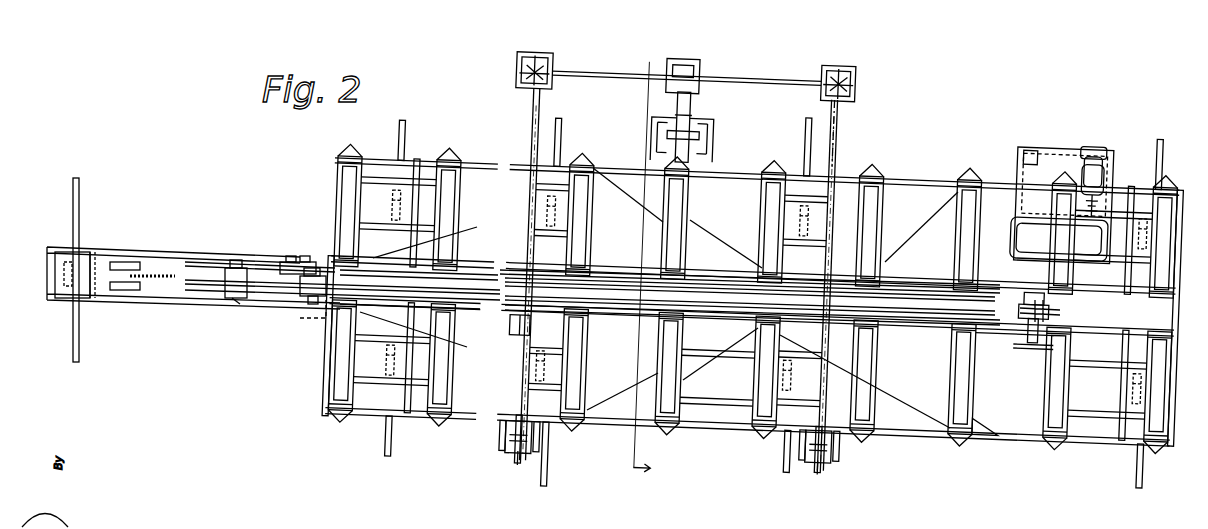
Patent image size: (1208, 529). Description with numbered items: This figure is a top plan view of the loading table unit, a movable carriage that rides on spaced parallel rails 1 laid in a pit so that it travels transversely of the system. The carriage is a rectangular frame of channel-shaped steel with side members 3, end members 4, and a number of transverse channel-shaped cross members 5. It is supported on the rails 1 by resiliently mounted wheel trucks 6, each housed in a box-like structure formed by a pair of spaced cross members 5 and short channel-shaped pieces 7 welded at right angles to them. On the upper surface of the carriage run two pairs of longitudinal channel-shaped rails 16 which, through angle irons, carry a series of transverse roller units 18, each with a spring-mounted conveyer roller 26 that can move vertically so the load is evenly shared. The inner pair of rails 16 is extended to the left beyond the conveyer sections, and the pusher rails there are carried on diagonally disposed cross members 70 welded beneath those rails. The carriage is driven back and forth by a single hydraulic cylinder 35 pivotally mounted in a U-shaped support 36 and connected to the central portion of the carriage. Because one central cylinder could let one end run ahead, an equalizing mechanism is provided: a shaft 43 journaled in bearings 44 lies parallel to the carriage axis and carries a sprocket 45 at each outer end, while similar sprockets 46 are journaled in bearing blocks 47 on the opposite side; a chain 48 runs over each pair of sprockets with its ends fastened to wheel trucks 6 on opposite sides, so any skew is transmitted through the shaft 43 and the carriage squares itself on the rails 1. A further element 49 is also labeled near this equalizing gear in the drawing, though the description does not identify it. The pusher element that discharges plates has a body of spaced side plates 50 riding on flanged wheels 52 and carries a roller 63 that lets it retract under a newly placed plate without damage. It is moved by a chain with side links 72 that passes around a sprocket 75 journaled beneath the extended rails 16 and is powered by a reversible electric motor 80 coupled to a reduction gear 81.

The rails 1 is at (388, 440).
The side members 3 is at (612, 172).
The end members 4 is at (332, 370).
The cross members 5 is at (418, 238).
The wheel trucks 6 is at (395, 204).
The short channel-shaped pieces 7 is at (412, 160).
The channel-shaped rails 16 is at (212, 255).
The roller units 18 is at (345, 182).
The conveyer roller 26 is at (455, 219).
The hydraulic cylinder 35 is at (690, 104).
The U-shaped support 36 is at (712, 130).
The shaft 43 is at (780, 80).
The bearings 44 is at (550, 66).
The sprocket 45 is at (518, 62).
The sprockets 46 is at (522, 460).
The bearing blocks 47 is at (500, 448).
The chain 48 is at (520, 360).
The vertical shaft 49 is at (840, 135).
The side plates 50 is at (290, 260).
The flanged wheels 52 is at (244, 298).
The roller 63 is at (312, 302).
The cross members 70 is at (304, 332).
The side links 72 is at (1015, 347).
The sprocket 75 is at (138, 300).
The reversible electric motor 80 is at (1098, 176).
The reduction gear 81 is at (1012, 228).